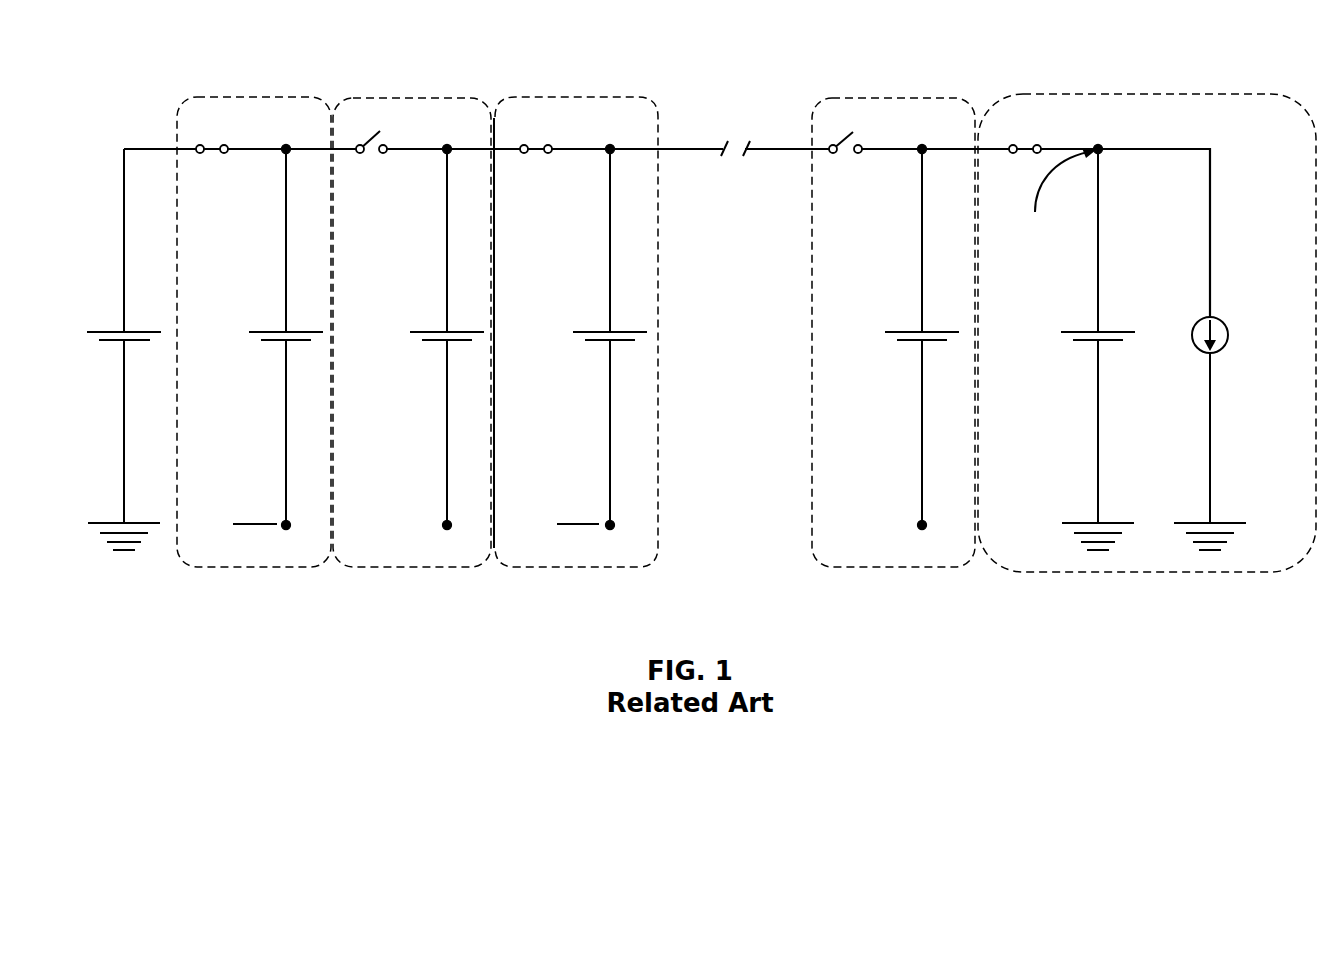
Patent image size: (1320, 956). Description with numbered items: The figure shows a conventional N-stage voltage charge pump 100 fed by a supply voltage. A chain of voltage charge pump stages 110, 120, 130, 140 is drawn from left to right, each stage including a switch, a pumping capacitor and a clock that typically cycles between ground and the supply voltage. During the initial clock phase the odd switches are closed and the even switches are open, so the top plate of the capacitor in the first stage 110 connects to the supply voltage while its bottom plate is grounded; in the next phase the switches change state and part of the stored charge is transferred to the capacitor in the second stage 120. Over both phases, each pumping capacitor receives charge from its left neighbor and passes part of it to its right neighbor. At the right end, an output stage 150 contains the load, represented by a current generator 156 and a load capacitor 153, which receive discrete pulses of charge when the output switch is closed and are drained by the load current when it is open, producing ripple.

The N-stage voltage charge pump 100 is at (108, 96).
The first voltage charge pump stage 110 is at (222, 568).
The second voltage charge pump stage 120 is at (370, 568).
The third voltage charge pump stage 130 is at (533, 568).
The Nth voltage charge pump stage 140 is at (852, 568).
The output stage 150 is at (1147, 351).
The load capacitor 153 is at (1107, 332).
The current generator 156 is at (1228, 330).